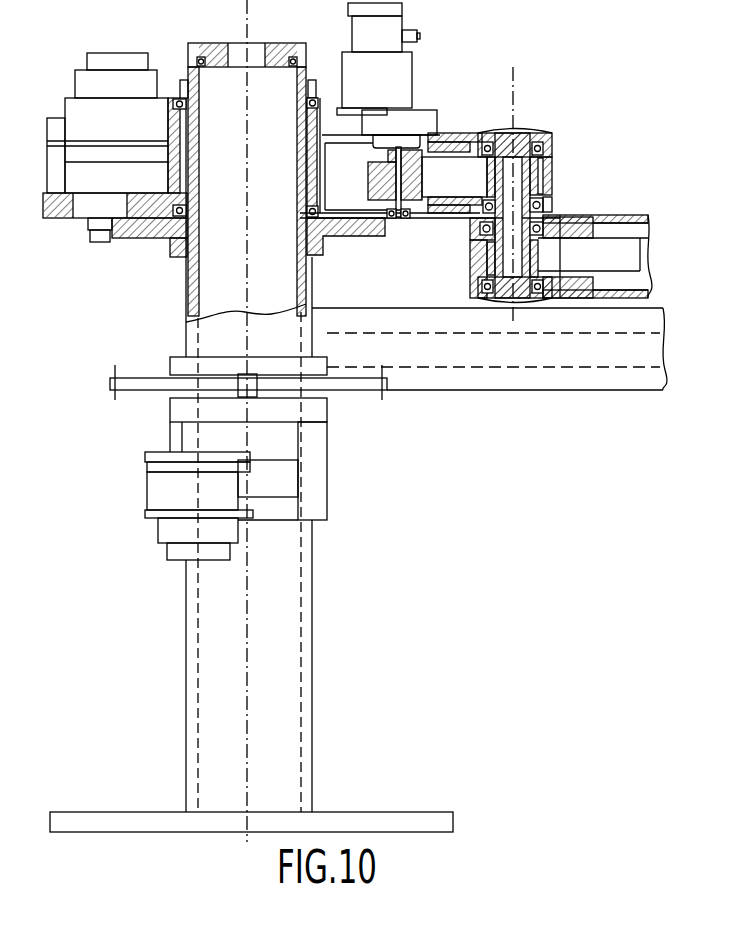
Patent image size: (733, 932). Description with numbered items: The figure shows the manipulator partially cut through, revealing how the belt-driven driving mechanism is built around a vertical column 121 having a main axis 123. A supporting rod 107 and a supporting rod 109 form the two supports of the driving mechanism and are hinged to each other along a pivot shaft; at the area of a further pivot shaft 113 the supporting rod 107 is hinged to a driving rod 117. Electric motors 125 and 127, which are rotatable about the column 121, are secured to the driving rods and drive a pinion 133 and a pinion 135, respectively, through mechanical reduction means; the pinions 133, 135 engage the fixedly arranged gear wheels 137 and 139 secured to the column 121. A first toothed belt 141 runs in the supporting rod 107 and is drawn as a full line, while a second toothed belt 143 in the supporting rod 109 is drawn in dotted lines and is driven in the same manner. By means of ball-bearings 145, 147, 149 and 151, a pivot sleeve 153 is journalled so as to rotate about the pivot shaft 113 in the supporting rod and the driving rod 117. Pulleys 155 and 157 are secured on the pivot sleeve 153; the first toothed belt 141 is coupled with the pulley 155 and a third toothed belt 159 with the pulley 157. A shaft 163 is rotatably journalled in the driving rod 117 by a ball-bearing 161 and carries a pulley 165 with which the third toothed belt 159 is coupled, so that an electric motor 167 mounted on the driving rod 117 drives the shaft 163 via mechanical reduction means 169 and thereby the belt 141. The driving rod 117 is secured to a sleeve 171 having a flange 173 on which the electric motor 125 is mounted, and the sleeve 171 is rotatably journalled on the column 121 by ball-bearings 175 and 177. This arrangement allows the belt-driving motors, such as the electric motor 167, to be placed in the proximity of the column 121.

The supporting rod 107 is at (625, 216).
The supporting rod 109 is at (538, 391).
The pivot shaft 113 is at (513, 83).
The driving rod 117 is at (419, 240).
The vertical column 121 is at (195, 281).
The main axis 123 is at (250, 648).
The electric motor 125 is at (75, 115).
The electric motor 127 is at (160, 493).
The pinion 133 is at (100, 243).
The pinion 135 is at (250, 374).
The gear wheel 137 is at (350, 229).
The gear wheel 139 is at (139, 386).
The first toothed belt 141 is at (639, 268).
The second toothed belt 143 is at (622, 369).
The ball-bearing 145 is at (542, 300).
The ball-bearing 147 is at (561, 218).
The ball-bearing 149 is at (547, 203).
The ball-bearing 151 is at (537, 132).
The pivot sleeve 153 is at (538, 257).
The pulley 155 is at (477, 262).
The pulley 157 is at (541, 162).
The third toothed belt 159 is at (455, 182).
The ball-bearing 161 is at (406, 219).
The shaft 163 is at (397, 182).
The pulley 165 is at (388, 158).
The electric motor 167 is at (400, 72).
The mechanical reduction means 169 is at (420, 110).
The sleeve 171 is at (320, 173).
The flange 173 is at (63, 212).
The ball-bearing 175 is at (318, 100).
The ball-bearing 177 is at (313, 212).